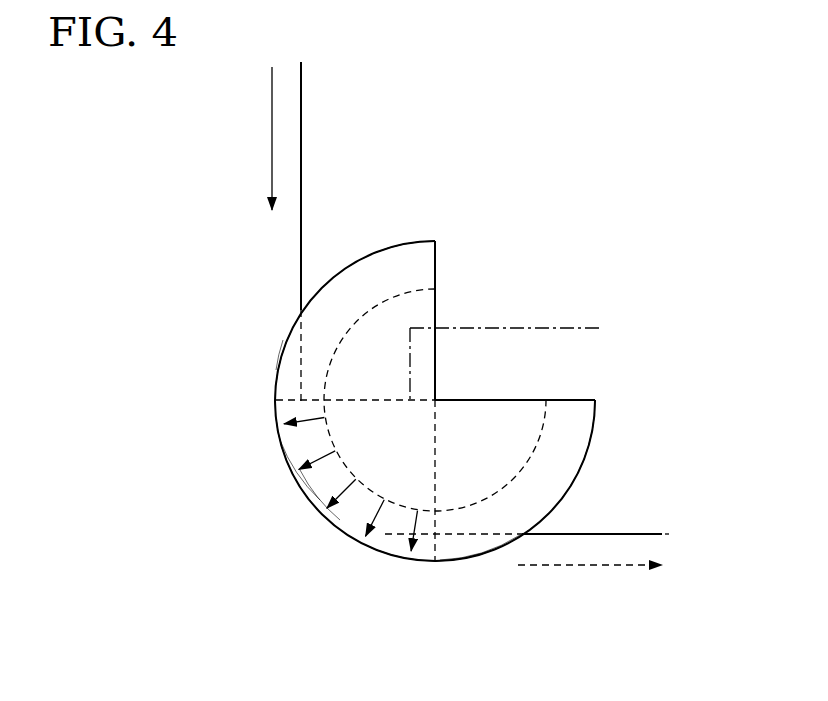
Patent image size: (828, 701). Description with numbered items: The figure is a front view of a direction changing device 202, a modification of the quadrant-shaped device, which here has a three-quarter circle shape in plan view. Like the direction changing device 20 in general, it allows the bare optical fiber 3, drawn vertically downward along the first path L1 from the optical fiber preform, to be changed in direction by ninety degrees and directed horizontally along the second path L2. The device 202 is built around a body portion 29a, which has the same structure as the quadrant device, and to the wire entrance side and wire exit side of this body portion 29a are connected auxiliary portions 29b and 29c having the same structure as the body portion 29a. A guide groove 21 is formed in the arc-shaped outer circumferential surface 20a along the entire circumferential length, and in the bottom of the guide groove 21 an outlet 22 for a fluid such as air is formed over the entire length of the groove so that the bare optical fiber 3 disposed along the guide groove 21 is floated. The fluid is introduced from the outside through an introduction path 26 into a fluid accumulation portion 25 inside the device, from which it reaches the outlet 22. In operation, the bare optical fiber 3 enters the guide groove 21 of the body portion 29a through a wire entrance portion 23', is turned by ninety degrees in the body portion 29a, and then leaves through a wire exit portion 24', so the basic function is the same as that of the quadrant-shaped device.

The bare optical fiber 3 is at (301, 98).
The first path L1 is at (301, 160).
The second path L2 is at (648, 534).
The direction changing device 20 is at (435, 401).
The direction changing device 202 is at (421, 240).
The outer circumferential surface 20a is at (302, 483).
The guide groove 21 is at (357, 480).
The outlet 22 is at (397, 483).
The wire entrance portion 23' is at (237, 357).
The wire exit portion 24' is at (480, 595).
The fluid accumulation portion 25 is at (398, 438).
The introduction path 26 is at (553, 328).
The body portion 29a is at (317, 483).
The auxiliary portion 29b is at (427, 320).
The auxiliary portion 29c is at (515, 410).